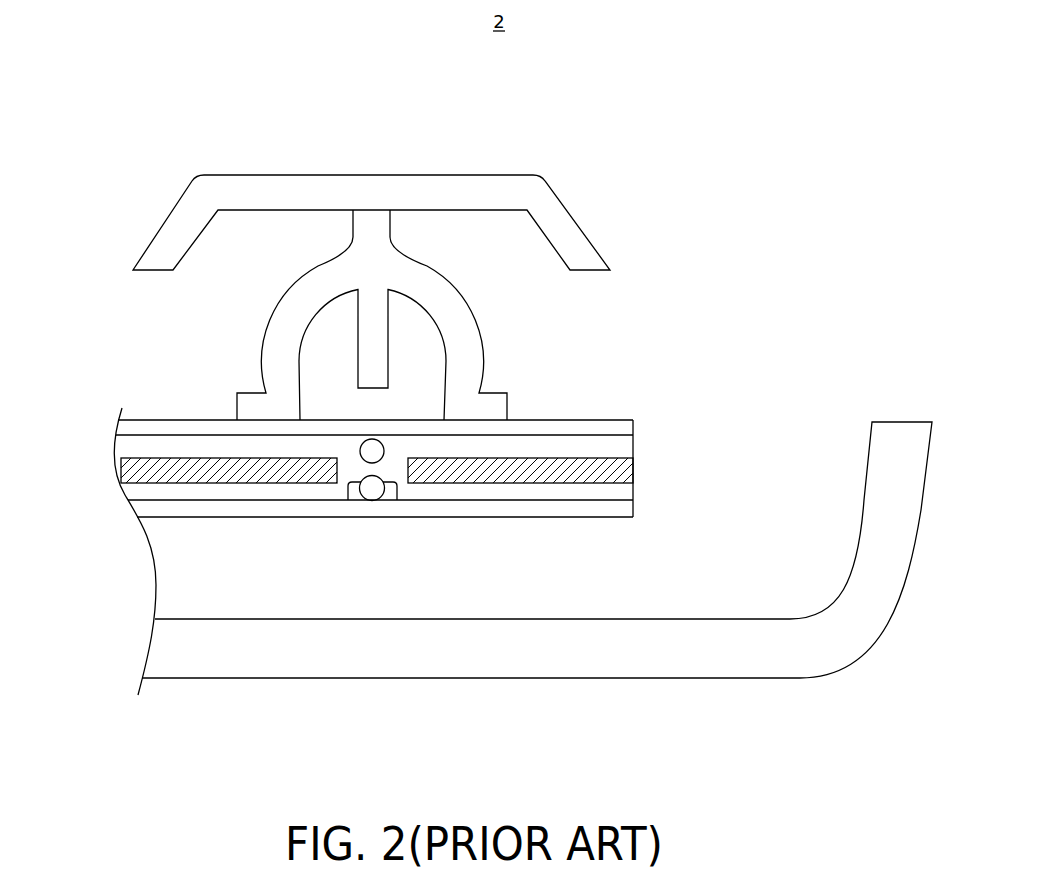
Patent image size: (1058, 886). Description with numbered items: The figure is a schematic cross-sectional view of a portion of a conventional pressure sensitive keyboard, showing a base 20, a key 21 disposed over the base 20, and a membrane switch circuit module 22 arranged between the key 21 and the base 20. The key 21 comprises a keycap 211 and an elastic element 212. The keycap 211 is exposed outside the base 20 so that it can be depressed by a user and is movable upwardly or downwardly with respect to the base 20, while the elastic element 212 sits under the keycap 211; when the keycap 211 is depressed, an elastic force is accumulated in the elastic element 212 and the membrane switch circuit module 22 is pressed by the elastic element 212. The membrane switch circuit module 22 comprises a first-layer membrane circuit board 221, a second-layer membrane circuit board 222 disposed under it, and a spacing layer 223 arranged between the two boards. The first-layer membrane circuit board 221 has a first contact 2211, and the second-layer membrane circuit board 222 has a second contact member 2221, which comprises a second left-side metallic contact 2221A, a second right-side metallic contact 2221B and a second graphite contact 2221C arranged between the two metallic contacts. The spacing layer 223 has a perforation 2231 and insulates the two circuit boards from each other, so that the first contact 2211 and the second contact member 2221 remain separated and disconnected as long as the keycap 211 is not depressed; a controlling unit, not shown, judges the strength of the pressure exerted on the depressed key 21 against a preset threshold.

The base 20 is at (785, 657).
The key 21 is at (707, 250).
The keycap 211 is at (577, 243).
The elastic element 212 is at (452, 303).
The membrane switch circuit module 22 is at (656, 466).
The first-layer membrane circuit board 221 is at (197, 428).
The first contact 2211 is at (364, 446).
The second-layer membrane circuit board 222 is at (138, 508).
The spacing layer 223 is at (120, 468).
The perforation 2231 is at (398, 448).
The second contact member 2221 is at (293, 563).
The second left-side metallic contact 2221A is at (350, 493).
The second right-side metallic contact 2221B is at (387, 494).
The second graphite contact 2221C is at (371, 497).